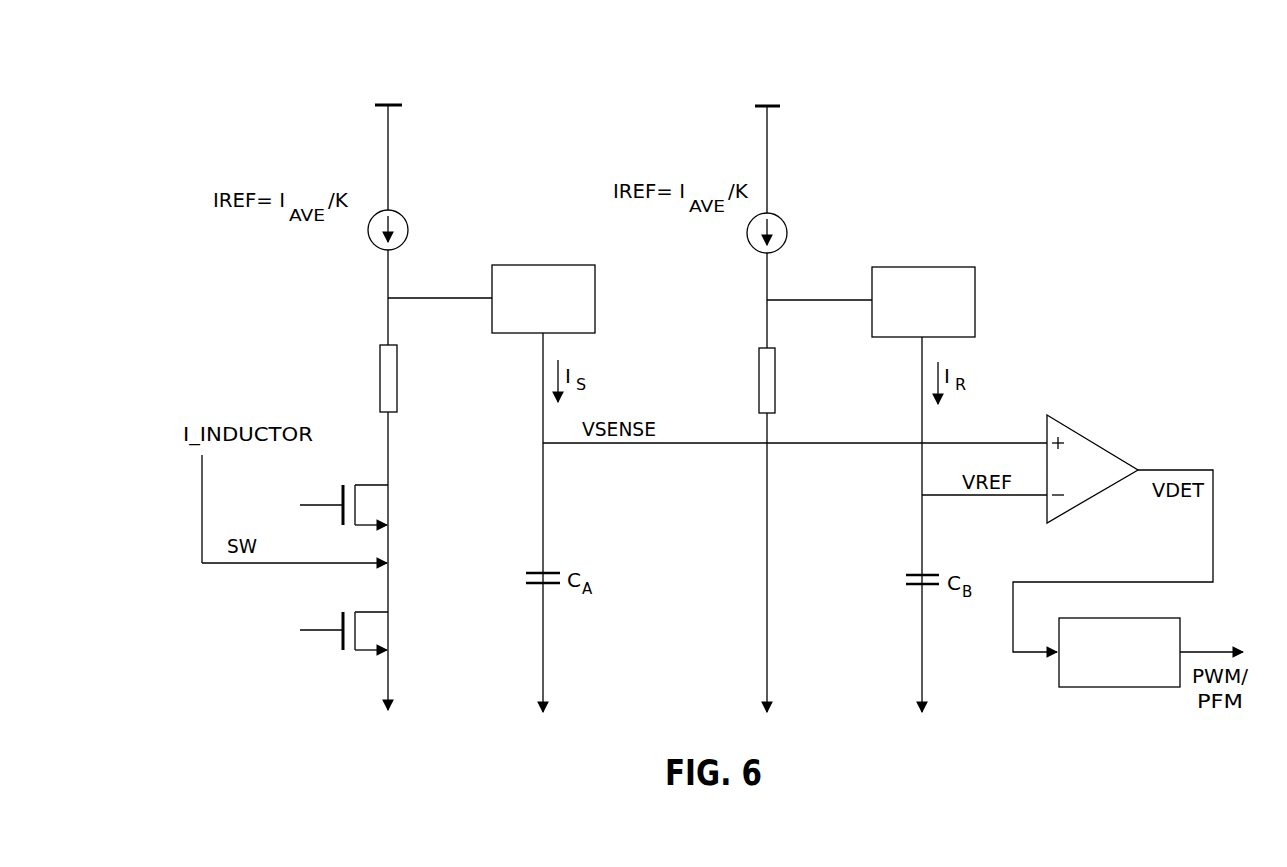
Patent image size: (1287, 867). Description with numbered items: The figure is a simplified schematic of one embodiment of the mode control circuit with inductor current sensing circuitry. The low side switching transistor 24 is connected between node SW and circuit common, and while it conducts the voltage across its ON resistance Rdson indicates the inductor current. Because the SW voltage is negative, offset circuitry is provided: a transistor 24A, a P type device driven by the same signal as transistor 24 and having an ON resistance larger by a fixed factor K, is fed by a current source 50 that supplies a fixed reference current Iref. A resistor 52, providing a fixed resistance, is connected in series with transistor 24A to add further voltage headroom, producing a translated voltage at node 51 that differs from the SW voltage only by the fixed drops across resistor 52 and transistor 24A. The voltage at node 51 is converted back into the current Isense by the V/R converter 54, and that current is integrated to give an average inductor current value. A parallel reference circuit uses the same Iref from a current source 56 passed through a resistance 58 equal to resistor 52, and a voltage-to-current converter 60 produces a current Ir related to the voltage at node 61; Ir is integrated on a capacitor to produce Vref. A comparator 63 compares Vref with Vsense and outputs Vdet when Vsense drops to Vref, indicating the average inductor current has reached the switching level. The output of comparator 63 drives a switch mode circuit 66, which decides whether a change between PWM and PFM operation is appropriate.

The low side switching transistor 24 is at (383, 620).
The transistor 24A is at (383, 492).
The current source 50 is at (405, 226).
The node 51 is at (386, 287).
The resistor 52 is at (398, 378).
The V/R converter 54 is at (568, 264).
The current source 56 is at (785, 229).
The resistance 58 is at (776, 380).
The voltage-to-current converter 60 is at (945, 264).
The node 61 is at (766, 289).
The comparator 63 is at (1085, 440).
The switch mode circuit 66 is at (1183, 622).